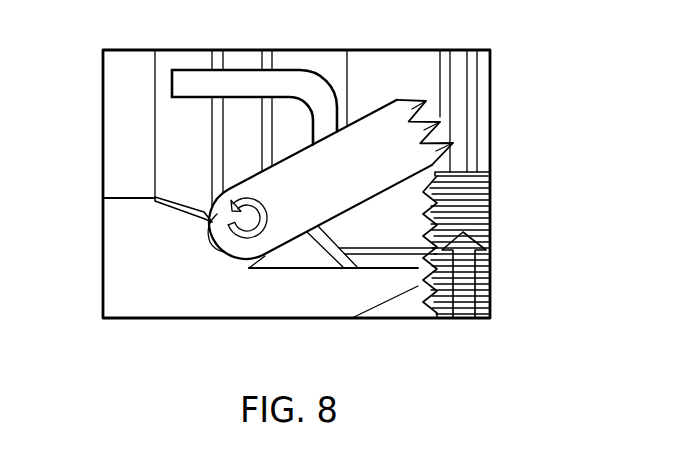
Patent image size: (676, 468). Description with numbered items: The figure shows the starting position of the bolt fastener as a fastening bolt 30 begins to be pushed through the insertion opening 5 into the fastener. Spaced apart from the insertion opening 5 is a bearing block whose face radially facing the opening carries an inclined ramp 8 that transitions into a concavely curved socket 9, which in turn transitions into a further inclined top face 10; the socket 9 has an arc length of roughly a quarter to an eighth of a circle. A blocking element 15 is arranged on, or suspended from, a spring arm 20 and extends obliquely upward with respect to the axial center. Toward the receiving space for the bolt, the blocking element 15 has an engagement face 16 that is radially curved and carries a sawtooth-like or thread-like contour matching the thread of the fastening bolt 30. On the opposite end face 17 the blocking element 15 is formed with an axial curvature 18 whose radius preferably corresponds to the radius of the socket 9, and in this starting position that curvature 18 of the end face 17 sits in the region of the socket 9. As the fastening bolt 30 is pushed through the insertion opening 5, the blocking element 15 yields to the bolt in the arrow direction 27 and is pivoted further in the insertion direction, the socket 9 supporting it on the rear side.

The insertion opening 5 is at (418, 286).
The inclined ramp 8 is at (277, 263).
The socket 9 is at (217, 253).
The inclined top face 10 is at (182, 211).
The blocking element 15 is at (357, 133).
The engagement face 16 is at (420, 105).
The end face 17 is at (267, 262).
The axial curvature 18 is at (210, 197).
The spring arm 20 is at (290, 83).
The arrow direction 27 is at (283, 213).
The fastening bolt 30 is at (485, 178).